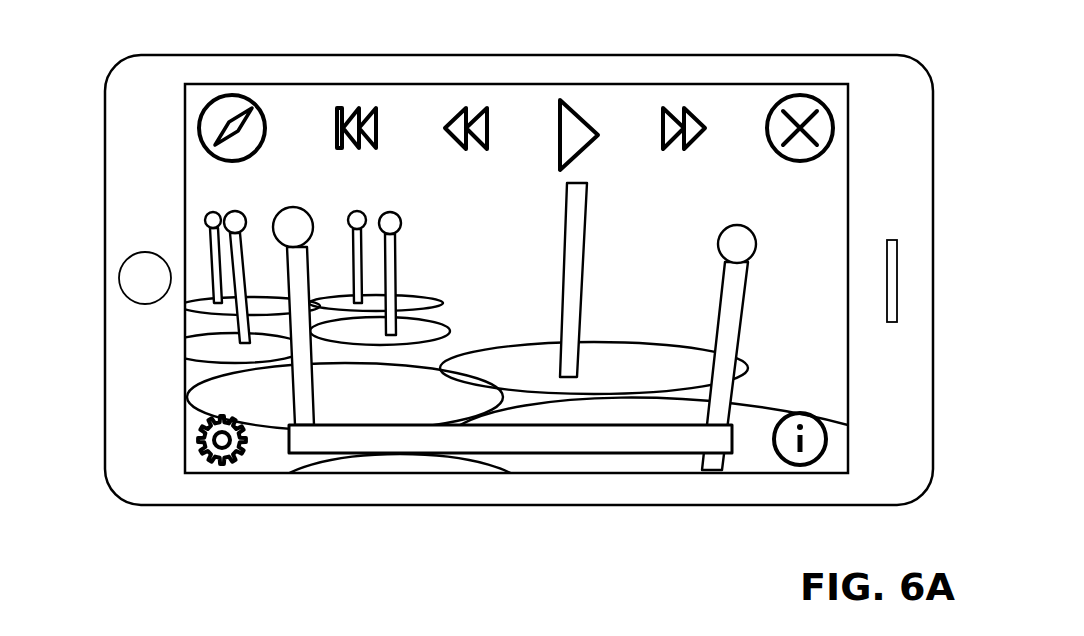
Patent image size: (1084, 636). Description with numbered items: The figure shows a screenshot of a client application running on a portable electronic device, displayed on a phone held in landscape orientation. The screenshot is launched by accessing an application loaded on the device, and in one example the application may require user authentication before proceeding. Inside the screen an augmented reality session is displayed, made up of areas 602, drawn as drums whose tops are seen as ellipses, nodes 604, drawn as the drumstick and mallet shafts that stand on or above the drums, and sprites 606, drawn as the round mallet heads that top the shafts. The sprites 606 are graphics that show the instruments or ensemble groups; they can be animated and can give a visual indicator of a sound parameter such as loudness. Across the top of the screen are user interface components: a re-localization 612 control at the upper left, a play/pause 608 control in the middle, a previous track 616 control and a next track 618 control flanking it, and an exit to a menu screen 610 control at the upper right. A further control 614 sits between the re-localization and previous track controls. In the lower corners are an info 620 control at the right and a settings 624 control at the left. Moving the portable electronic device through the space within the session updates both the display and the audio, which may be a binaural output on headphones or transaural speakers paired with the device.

The area 602 is at (377, 390).
The node 604 is at (307, 388).
The sprite 606 is at (288, 222).
The play/pause 608 is at (572, 108).
The exit to a menu screen 610 is at (802, 108).
The re-localization 612 is at (232, 97).
The skip back button 614 is at (358, 107).
The previous track 616 is at (467, 107).
The next track 618 is at (685, 108).
The info 620 is at (790, 450).
The settings 624 is at (215, 462).